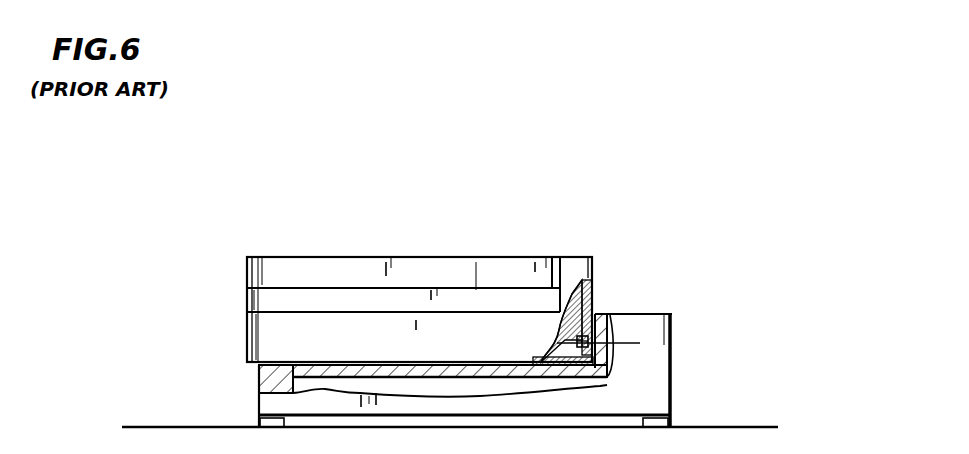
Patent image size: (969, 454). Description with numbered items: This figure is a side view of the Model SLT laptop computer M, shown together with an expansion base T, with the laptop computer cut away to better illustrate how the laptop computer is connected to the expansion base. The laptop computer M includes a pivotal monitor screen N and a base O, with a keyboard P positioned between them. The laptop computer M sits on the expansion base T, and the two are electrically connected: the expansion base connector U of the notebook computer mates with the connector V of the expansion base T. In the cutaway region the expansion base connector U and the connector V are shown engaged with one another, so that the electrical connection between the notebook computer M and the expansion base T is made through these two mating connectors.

The laptop computer M is at (230, 322).
The pivotal monitor screen N is at (345, 267).
The keyboard P is at (256, 297).
The base O is at (258, 345).
The expansion base connector U is at (577, 343).
The connector V is at (640, 343).
The expansion base T is at (657, 378).